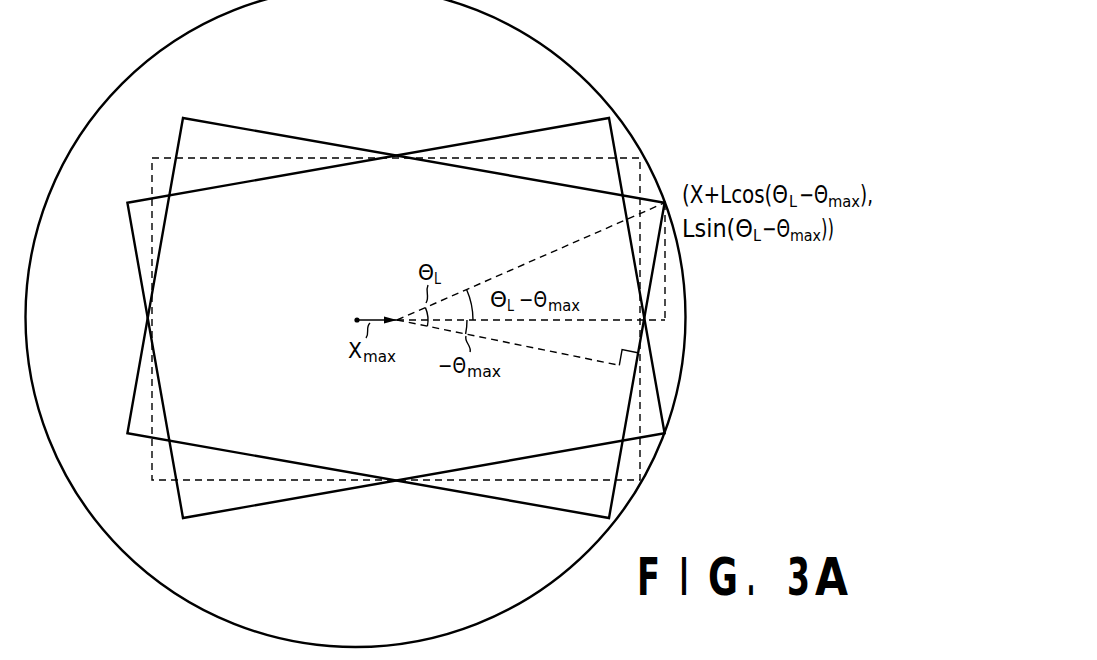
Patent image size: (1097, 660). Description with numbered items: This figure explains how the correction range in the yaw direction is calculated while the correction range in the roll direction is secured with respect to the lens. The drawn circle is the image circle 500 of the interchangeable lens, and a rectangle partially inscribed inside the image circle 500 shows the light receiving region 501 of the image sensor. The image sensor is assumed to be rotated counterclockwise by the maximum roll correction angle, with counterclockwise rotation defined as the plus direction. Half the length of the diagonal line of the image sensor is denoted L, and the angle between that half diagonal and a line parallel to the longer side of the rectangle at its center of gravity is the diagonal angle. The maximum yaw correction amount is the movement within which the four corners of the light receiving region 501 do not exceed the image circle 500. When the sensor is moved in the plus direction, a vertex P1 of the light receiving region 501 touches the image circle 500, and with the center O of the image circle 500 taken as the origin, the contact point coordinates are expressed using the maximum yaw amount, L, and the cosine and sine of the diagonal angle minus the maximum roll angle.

The image circle 500 is at (579, 71).
The light receiving region 501 is at (295, 138).
The vertex P1 is at (668, 198).
The center O is at (344, 320).
The half length L of the diagonal line L is at (548, 250).